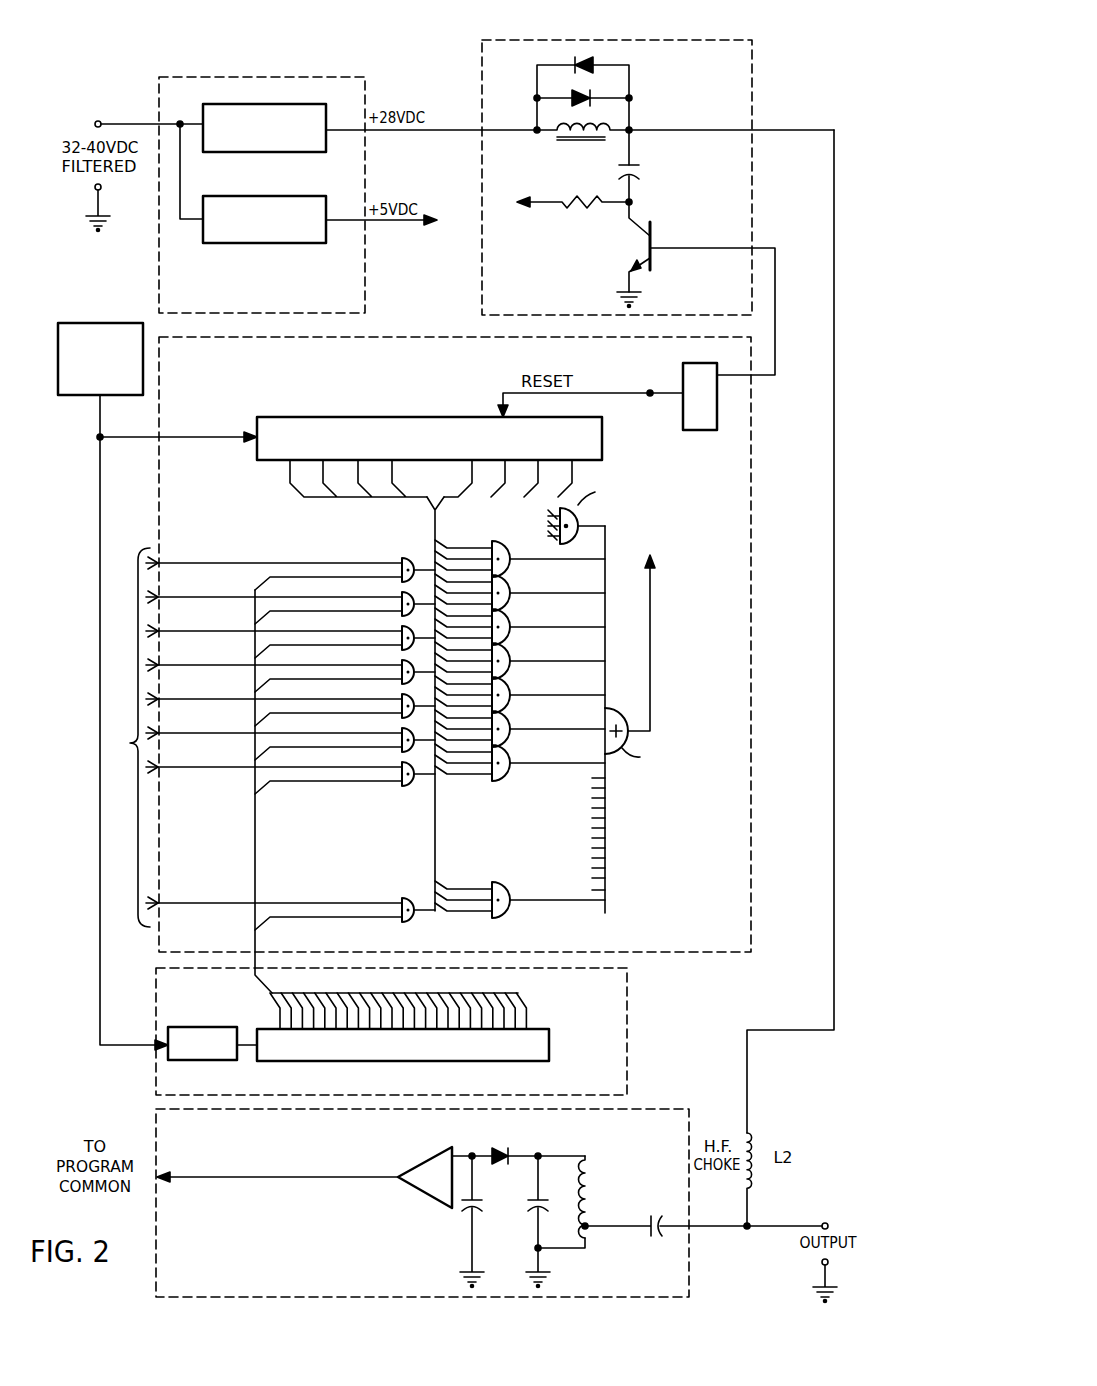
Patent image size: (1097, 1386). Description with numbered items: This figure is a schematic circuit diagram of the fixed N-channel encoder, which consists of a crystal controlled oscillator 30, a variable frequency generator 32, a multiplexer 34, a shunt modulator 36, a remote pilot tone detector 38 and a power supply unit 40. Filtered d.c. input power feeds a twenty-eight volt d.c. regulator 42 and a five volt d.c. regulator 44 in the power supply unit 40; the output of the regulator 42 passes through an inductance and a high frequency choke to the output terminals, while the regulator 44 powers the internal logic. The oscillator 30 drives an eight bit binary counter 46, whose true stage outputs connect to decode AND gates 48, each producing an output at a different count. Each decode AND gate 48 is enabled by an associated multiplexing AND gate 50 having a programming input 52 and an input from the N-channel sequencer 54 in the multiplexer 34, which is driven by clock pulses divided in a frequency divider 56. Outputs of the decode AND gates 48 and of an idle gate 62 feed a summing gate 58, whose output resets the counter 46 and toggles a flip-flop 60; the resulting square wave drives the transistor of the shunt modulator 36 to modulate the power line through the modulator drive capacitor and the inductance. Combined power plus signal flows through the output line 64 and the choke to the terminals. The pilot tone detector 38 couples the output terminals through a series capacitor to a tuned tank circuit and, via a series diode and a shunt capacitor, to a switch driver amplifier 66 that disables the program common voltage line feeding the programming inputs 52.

The crystal controlled oscillator 30 is at (96, 323).
The variable frequency generator 32 is at (751, 858).
The multiplexer 34 is at (627, 1025).
The shunt modulator 36 is at (482, 245).
The remote pilot tone detector 38 is at (489, 1215).
The power supply unit 40 is at (365, 245).
The 28 volt d.c. regulator 42 is at (292, 152).
The 5 volt d.c. regulator 44 is at (318, 238).
The 8 bit binary counter 46 is at (308, 417).
The decode AND gates 48 is at (507, 556).
The multiplexing AND gates 50 is at (398, 567).
The programming input 52 is at (148, 598).
The N-channel sequencer 54 is at (549, 1045).
The frequency divider 56 is at (210, 1027).
The summing gate 58 is at (613, 708).
The flip-flop 60 is at (700, 430).
The idle gate 62 is at (575, 545).
The output line 64 is at (834, 540).
The switch driver amplifier 66 is at (436, 1195).